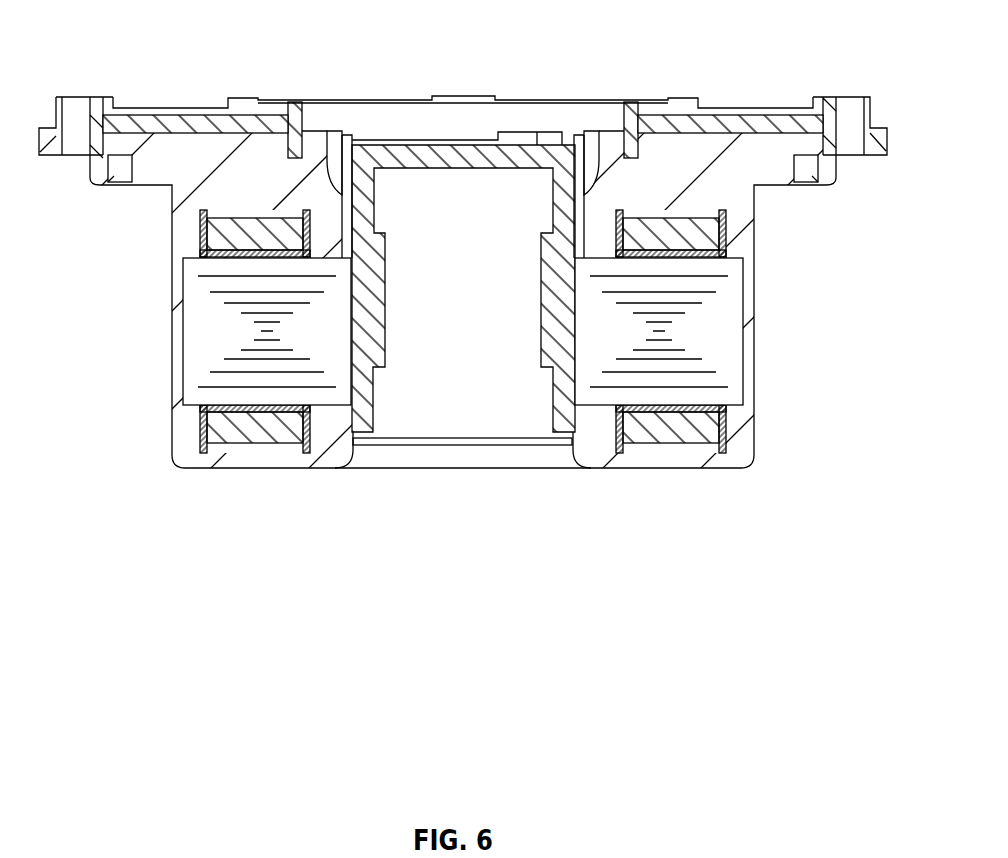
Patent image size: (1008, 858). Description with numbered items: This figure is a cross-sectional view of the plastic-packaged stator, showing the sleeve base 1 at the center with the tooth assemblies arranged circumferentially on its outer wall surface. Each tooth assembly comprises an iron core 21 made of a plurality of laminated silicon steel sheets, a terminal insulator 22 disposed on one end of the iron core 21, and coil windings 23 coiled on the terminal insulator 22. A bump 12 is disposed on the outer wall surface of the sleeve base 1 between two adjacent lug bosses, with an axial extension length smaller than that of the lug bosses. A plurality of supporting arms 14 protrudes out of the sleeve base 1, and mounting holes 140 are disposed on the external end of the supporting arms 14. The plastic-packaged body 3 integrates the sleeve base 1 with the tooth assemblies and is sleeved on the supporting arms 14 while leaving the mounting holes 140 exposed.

The sleeve base 1 is at (572, 190).
The plastic-packaged body 3 is at (238, 183).
The bump 12 is at (347, 257).
The supporting arms 14 is at (707, 125).
The mounting holes 140 is at (848, 128).
The iron core 21 is at (223, 340).
The terminal insulator 22 is at (202, 247).
The coil windings 23 is at (253, 430).